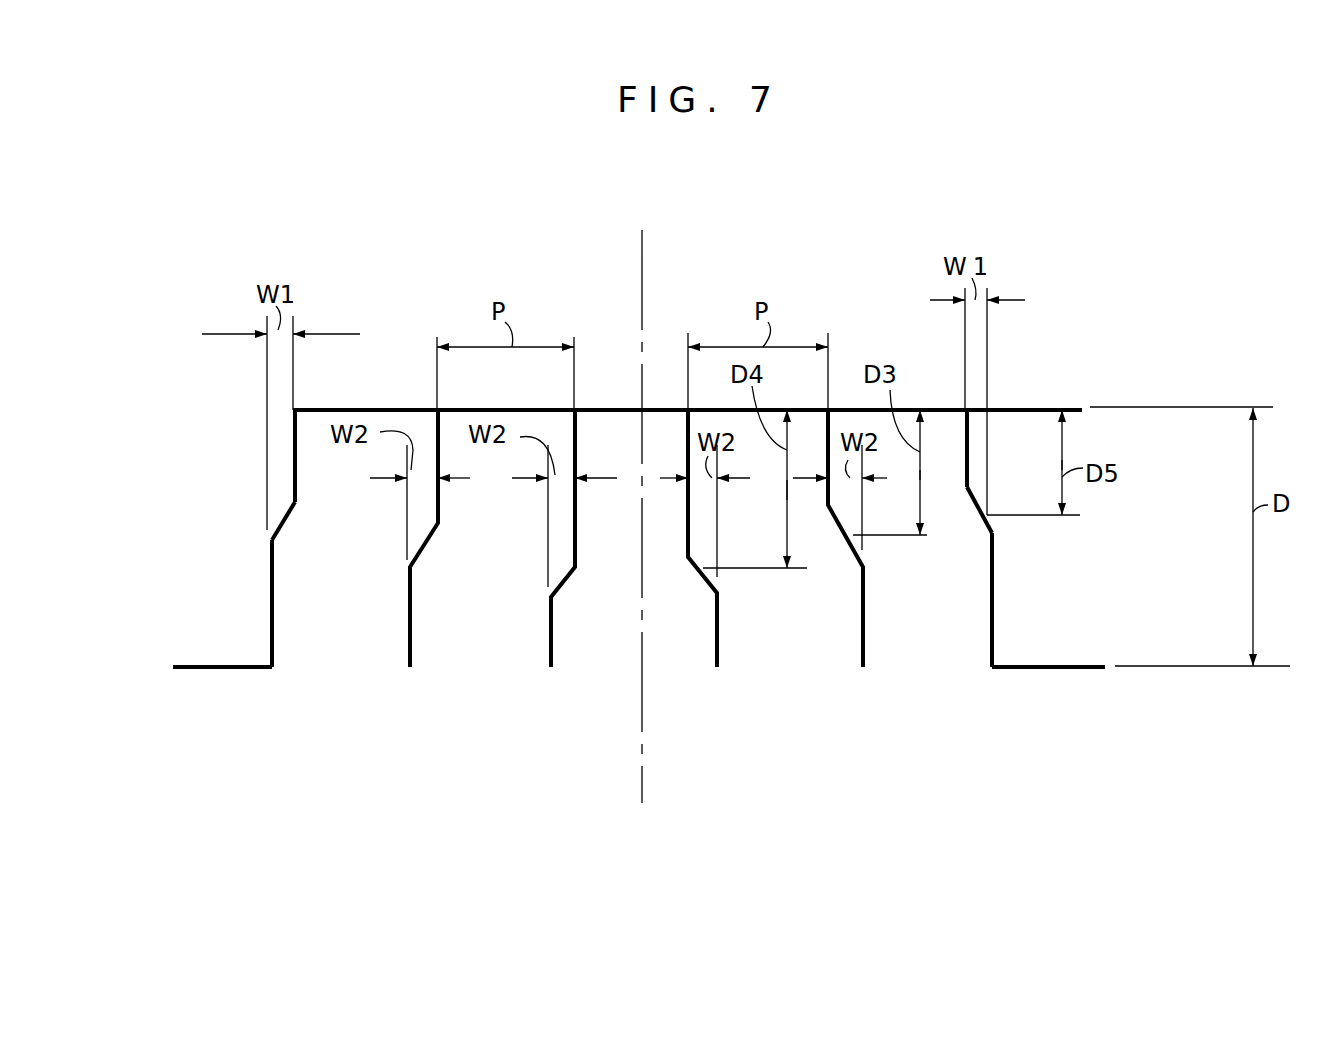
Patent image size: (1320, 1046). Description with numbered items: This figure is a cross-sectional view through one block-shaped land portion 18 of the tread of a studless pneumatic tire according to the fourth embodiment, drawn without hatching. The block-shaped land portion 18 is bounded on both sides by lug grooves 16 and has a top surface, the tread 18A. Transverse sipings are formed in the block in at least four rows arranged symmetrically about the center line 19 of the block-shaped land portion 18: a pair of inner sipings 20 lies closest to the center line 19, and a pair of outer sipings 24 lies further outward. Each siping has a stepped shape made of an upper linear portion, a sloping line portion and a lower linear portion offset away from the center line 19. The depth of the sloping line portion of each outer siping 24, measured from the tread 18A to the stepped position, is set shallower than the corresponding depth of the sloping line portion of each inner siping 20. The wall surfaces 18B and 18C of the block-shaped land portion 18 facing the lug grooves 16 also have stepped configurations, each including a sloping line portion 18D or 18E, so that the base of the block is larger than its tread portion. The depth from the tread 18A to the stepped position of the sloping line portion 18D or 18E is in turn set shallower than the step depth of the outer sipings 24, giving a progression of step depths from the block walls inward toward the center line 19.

The lug groove 16 is at (203, 665).
The block-shaped land portion 18 is at (921, 392).
The tread 18A is at (550, 410).
The wall surface 18B is at (992, 583).
The wall surface 18C is at (268, 577).
The sloping line portion 18D is at (975, 498).
The sloping line portion 18E is at (282, 522).
The center line 19 is at (642, 283).
The inner siping 20 is at (712, 612).
The outer siping 24 is at (406, 608).